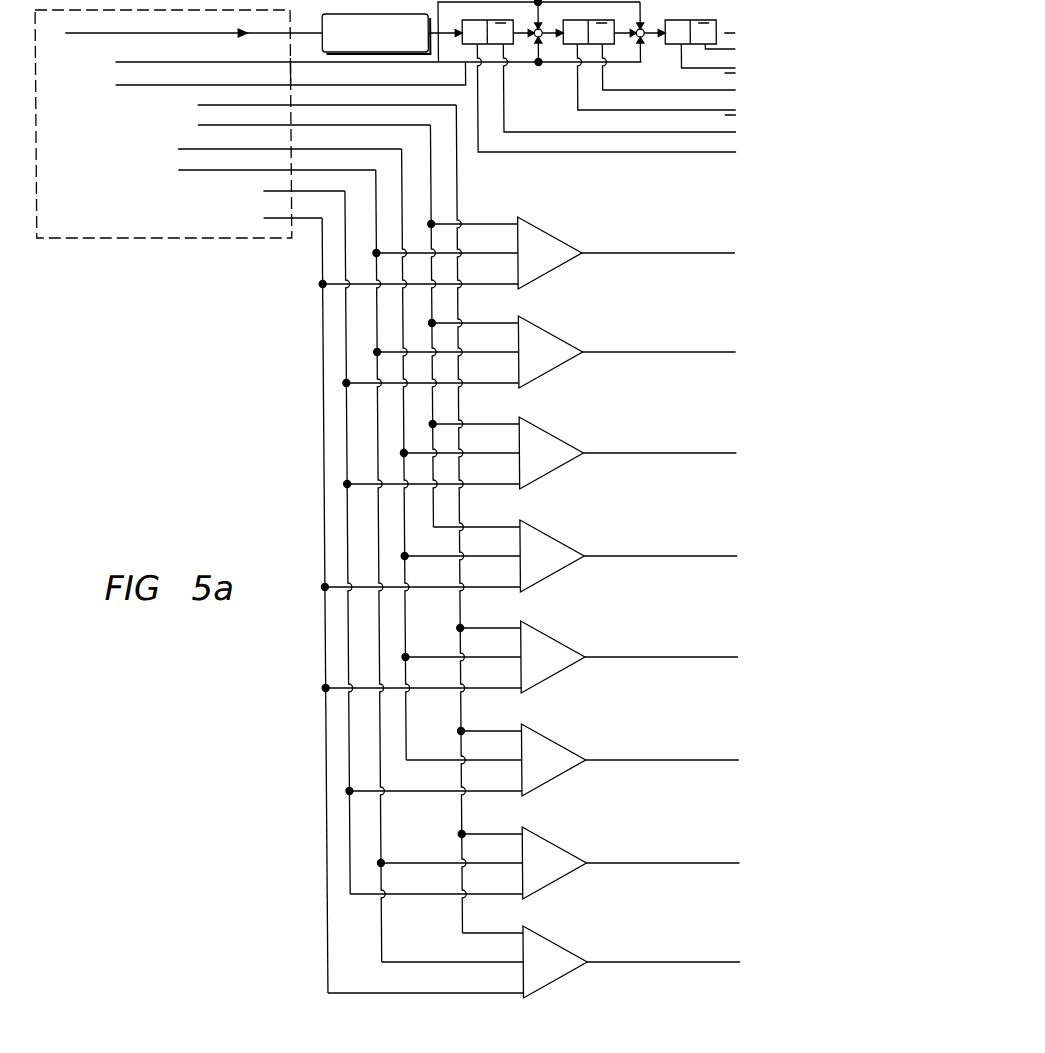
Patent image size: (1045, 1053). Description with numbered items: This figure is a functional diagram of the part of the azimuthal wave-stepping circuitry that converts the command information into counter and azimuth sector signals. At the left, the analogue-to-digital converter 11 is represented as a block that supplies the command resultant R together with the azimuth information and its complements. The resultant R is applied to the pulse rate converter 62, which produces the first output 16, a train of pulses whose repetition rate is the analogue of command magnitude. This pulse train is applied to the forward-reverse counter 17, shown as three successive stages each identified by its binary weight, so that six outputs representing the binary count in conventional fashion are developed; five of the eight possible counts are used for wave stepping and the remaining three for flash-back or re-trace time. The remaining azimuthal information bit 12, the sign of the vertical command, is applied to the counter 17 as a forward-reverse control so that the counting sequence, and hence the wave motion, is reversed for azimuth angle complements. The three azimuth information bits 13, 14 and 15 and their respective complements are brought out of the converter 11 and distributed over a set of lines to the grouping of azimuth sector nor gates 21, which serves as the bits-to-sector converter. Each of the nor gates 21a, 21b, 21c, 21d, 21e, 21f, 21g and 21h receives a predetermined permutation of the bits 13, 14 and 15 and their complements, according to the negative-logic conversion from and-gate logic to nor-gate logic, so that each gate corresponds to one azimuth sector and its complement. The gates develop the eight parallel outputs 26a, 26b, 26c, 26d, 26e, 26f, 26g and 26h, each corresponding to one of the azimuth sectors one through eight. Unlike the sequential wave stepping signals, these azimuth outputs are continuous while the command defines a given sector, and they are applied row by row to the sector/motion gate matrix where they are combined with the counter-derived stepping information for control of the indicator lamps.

The analogue-to-digital converter 11 is at (233, 240).
The azimuthal information bit 12 is at (280, 80).
The azimuth information bit 13 is at (280, 120).
The azimuth information bit 14 is at (280, 167).
The azimuth information bit 15 is at (284, 212).
The first output 16 is at (248, 33).
The forward-reverse counter 17 is at (632, 19).
The azimuth sector nor gates 21 is at (525, 199).
The nor gate 21a is at (548, 231).
The nor gate 21b is at (548, 330).
The nor gate 21c is at (548, 431).
The nor gate 21d is at (548, 534).
The nor gate 21e is at (548, 635).
The nor gate 21f is at (548, 738).
The nor gate 21g is at (548, 841).
The nor gate 21h is at (548, 940).
The azimuth sector output 26a is at (663, 250).
The azimuth sector output 26b is at (663, 349).
The azimuth sector output 26c is at (663, 450).
The azimuth sector output 26d is at (663, 553).
The azimuth sector output 26e is at (663, 654).
The azimuth sector output 26f is at (663, 757).
The azimuth sector output 26g is at (663, 860).
The azimuth sector output 26h is at (663, 959).
The pulse rate converter 62 is at (320, 25).